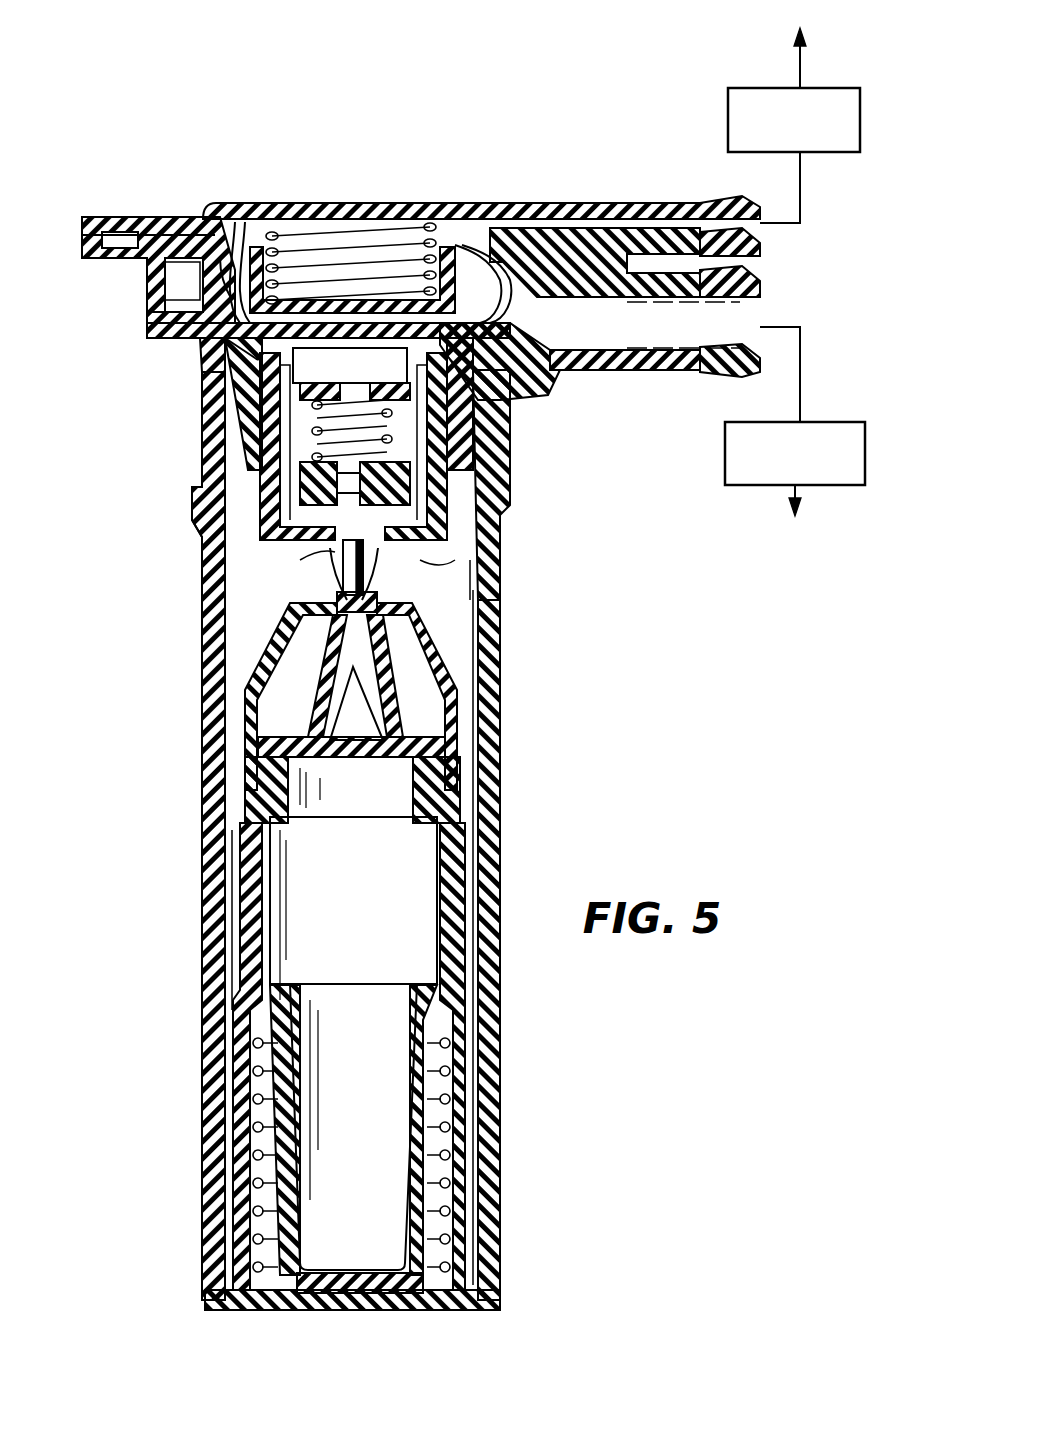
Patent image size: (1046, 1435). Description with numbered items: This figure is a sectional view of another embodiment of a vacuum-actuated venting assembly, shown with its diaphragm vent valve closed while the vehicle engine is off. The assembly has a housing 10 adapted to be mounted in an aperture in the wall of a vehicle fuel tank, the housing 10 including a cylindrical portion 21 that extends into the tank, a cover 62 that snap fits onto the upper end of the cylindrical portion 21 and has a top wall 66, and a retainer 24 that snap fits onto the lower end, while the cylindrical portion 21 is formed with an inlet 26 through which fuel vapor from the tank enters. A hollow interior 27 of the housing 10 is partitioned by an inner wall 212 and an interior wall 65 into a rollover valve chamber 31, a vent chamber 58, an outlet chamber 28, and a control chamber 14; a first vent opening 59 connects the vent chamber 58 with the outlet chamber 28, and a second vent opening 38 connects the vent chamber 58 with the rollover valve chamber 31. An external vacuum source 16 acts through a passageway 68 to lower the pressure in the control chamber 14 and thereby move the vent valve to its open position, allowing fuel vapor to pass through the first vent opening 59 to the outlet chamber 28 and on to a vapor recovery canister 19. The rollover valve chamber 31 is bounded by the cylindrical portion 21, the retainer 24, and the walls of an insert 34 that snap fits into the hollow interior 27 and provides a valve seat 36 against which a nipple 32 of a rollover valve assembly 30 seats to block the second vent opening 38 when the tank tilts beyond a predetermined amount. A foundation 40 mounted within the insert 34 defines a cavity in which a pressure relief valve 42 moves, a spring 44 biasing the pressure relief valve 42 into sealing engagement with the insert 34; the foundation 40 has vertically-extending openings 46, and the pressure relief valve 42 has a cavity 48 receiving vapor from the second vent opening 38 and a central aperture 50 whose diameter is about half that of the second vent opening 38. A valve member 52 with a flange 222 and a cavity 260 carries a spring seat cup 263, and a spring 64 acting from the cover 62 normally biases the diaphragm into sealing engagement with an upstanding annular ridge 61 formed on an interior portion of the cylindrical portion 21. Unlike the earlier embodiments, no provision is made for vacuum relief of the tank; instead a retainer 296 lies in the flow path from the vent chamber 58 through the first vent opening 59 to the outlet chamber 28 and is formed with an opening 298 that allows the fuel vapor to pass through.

The housing 10 is at (182, 450).
The control chamber 14 is at (365, 300).
The external vacuum source 16 is at (728, 125).
The vapor recovery canister 19 is at (828, 422).
The cylindrical portion 21 is at (212, 665).
The retainer 24 is at (440, 1310).
The inlet 26 is at (478, 590).
The hollow interior 27 is at (428, 560).
The outlet chamber 28 is at (655, 340).
The rollover valve assembly 30 is at (462, 772).
The rollover valve chamber 31 is at (472, 660).
The nipple 32 is at (342, 610).
The insert 34 is at (278, 493).
The valve seat 36 is at (318, 548).
The second vent opening 38 is at (328, 550).
The foundation 40 is at (468, 490).
The pressure relief valve 42 is at (400, 440).
The spring 44 is at (380, 425).
The vertically-extending openings 46 is at (270, 452).
The cavity 48 is at (412, 468).
The central aperture 50 is at (308, 360).
The valve member 52 is at (362, 535).
The vent chamber 58 is at (258, 380).
The first vent opening 59 is at (358, 355).
The upstanding annular ridge 61 is at (375, 350).
The cover 62 is at (165, 217).
The spring 64 is at (296, 226).
The interior wall 65 is at (500, 347).
The top wall 66 is at (511, 214).
The passageway 68 is at (668, 230).
The inner wall 212 is at (218, 340).
The flange 222 is at (215, 215).
The cavity 260 is at (192, 300).
The spring seat cup 263 is at (352, 320).
The retainer 296 is at (250, 360).
The opening 298 is at (226, 282).